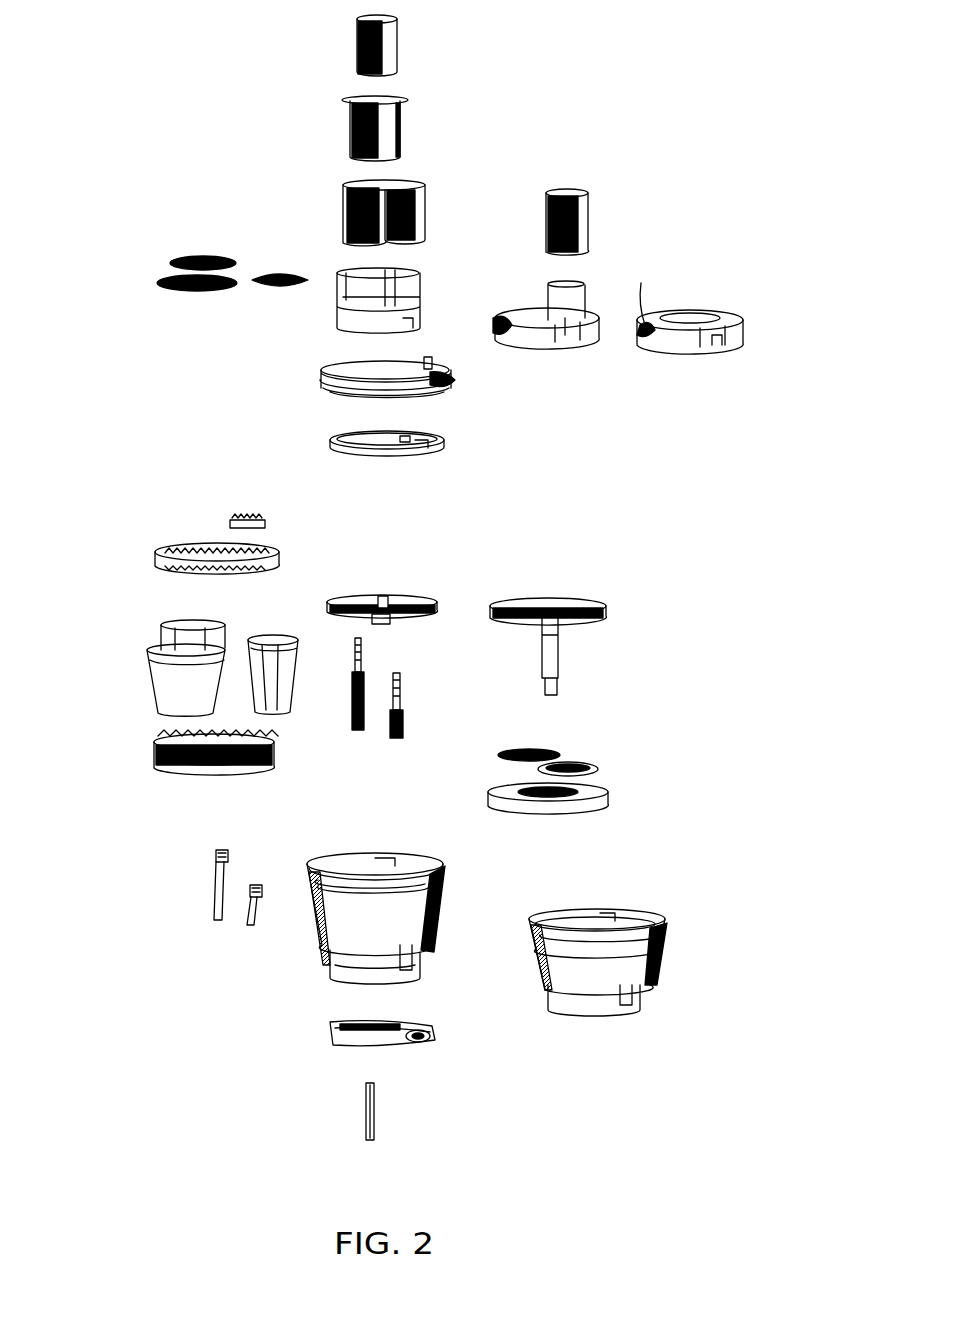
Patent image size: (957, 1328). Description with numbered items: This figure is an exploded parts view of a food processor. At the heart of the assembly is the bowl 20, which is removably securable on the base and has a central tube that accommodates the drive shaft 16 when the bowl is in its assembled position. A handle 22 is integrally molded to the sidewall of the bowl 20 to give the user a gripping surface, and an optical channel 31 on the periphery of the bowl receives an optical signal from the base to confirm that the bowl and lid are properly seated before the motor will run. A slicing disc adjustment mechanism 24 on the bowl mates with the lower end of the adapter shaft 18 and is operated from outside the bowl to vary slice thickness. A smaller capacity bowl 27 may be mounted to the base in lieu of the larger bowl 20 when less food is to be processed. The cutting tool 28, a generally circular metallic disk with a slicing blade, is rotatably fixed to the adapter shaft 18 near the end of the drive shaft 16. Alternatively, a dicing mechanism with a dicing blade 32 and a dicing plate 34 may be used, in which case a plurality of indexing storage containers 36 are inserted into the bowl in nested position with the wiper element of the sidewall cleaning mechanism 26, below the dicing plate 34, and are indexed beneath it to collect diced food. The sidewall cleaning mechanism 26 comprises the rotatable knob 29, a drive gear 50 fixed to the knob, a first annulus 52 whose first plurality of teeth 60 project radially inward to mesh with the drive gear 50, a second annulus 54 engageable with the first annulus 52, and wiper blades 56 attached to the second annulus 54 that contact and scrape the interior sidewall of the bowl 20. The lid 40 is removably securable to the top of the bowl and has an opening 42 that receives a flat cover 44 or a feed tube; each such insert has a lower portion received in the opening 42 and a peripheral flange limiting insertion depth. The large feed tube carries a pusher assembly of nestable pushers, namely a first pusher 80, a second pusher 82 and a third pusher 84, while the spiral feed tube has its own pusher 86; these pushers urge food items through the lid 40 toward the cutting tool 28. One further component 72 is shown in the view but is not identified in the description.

The drive shaft 16 is at (372, 1105).
The adapter shaft 18 is at (358, 732).
The bowl 20 is at (332, 930).
The handle 22 is at (437, 905).
The slicing disc adjustment mechanism 24 is at (340, 1033).
The sidewall cleaning mechanism 26 is at (220, 928).
The smaller capacity bowl 27 is at (672, 903).
The cutting tool 28 is at (405, 583).
The rotatable knob 29 is at (433, 355).
The optical channel 31 is at (315, 890).
The dicing blade 32 is at (583, 605).
The dicing plate 34 is at (614, 751).
The indexing storage containers 36 is at (138, 636).
The lid 40 is at (302, 378).
The opening 42 is at (408, 298).
The flat cover 44 is at (572, 325).
The drive gear 50 is at (243, 520).
The first annulus 52 is at (168, 548).
The second annulus 54 is at (155, 755).
The wiper blades 56 is at (212, 886).
The first plurality of teeth 60 is at (322, 320).
The hub 72 is at (502, 318).
The first pusher 80 is at (405, 208).
The second pusher 82 is at (398, 118).
The third pusher 84 is at (385, 45).
The pusher 86 is at (570, 222).